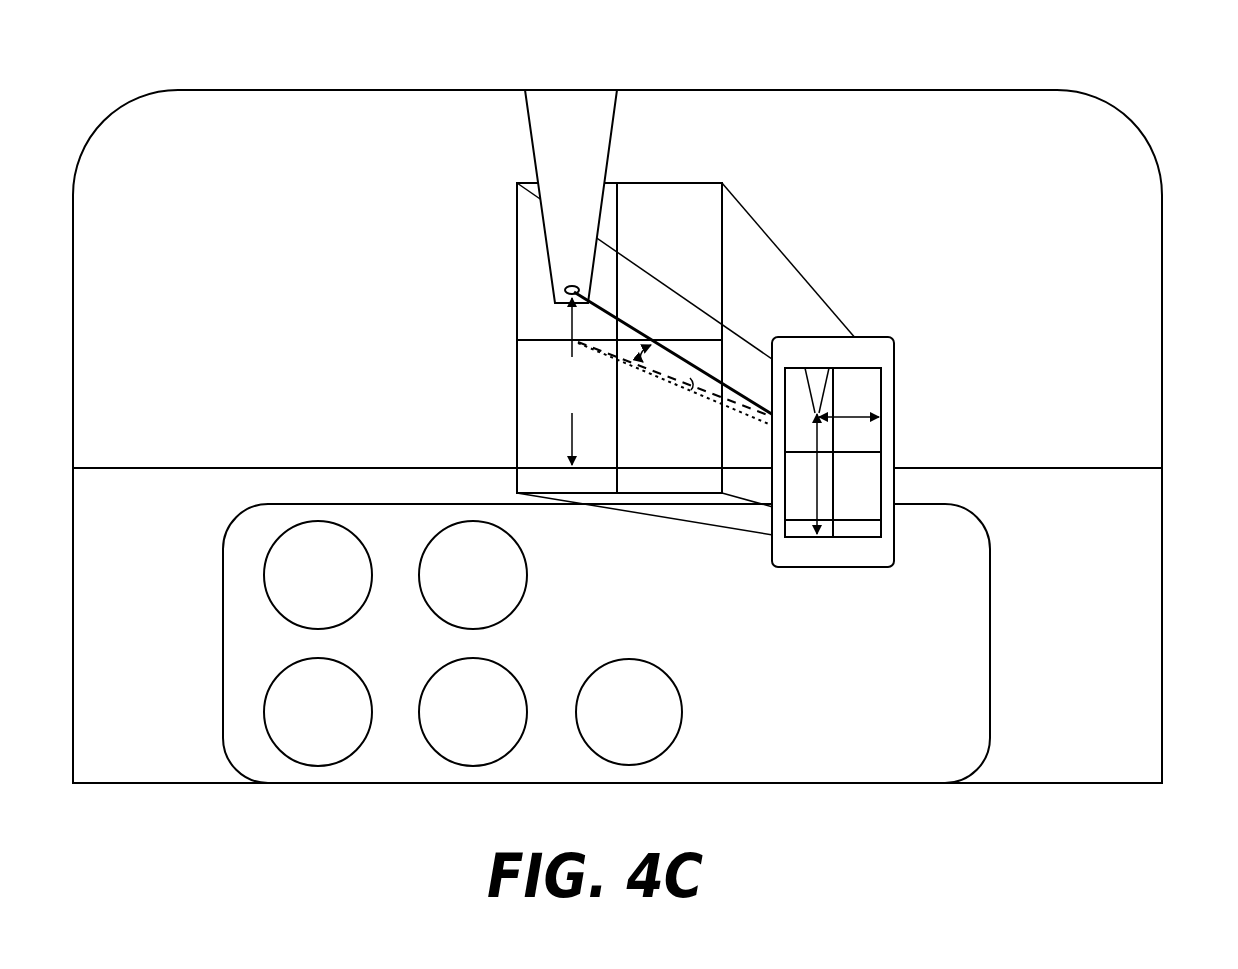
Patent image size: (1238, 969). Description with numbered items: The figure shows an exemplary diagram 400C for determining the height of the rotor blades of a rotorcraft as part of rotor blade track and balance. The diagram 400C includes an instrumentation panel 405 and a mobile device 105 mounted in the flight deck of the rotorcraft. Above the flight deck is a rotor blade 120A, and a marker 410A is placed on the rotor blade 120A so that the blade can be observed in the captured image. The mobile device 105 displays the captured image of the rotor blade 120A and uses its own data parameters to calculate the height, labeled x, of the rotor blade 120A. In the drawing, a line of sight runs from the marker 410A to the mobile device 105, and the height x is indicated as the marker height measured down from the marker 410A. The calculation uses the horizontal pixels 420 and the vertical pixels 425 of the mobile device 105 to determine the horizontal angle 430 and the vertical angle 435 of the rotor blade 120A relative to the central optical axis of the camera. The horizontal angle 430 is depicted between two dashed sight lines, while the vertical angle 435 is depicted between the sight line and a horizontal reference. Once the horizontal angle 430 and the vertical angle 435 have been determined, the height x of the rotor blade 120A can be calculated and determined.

The exemplary diagram 400C is at (1186, 52).
The rotor blade 120A is at (615, 105).
The marker 410A is at (566, 289).
The vertical angle 435 is at (642, 340).
The horizontal angle 430 is at (693, 383).
The horizontal pixels 420 is at (864, 414).
The vertical pixels 425 is at (893, 505).
The mobile device 105 is at (894, 461).
The instrumentation panel 405 is at (955, 648).